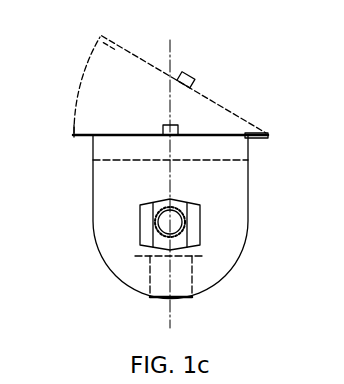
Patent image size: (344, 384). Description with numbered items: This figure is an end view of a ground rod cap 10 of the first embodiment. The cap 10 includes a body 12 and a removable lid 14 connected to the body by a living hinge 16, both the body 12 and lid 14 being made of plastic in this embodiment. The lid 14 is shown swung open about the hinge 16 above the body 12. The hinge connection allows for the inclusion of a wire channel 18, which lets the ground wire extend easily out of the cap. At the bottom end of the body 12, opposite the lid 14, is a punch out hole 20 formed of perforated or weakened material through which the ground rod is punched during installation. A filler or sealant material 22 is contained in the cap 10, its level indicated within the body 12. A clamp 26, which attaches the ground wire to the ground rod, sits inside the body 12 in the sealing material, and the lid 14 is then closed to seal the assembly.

The ground rod cap 10 is at (219, 52).
The body 12 is at (228, 262).
The removable lid 14 is at (137, 128).
The living hinge 16 is at (268, 131).
The wire channel 18 is at (179, 122).
The punch out hole 20 is at (166, 305).
The filler or sealant material 22 is at (117, 163).
The clamp 26 is at (203, 218).